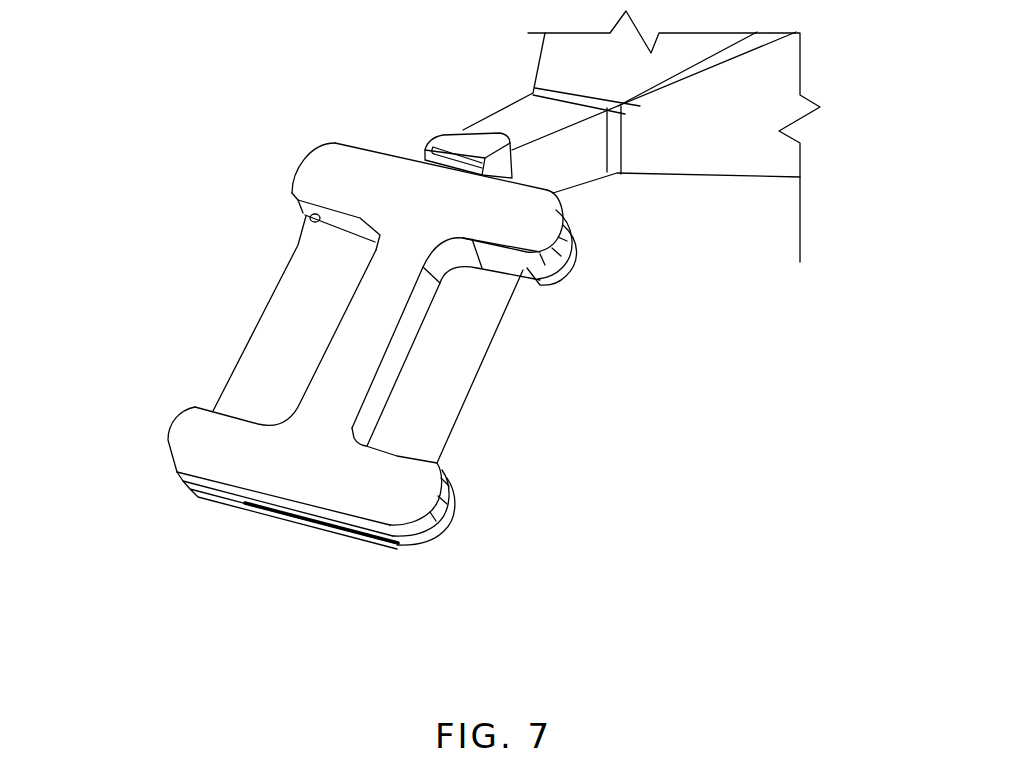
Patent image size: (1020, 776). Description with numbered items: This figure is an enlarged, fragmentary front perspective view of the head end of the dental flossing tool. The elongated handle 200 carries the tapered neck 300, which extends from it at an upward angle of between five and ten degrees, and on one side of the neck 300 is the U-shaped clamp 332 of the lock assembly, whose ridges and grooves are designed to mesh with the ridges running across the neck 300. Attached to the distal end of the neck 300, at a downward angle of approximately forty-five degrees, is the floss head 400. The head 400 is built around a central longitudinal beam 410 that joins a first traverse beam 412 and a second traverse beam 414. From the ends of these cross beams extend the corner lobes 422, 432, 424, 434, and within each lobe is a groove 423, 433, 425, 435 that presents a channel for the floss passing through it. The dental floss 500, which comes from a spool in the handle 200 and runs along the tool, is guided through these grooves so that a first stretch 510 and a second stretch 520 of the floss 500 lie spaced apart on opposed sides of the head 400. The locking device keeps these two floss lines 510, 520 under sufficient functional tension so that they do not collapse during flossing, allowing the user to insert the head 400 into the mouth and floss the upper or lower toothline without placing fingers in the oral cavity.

The handle 200 is at (733, 160).
The neck 300 is at (567, 167).
The U-shaped clamp 332 is at (462, 137).
The floss head 400 is at (364, 362).
The central longitudinal beam 410 is at (373, 332).
The first traverse beam 412 is at (307, 519).
The second traverse beam 414 is at (440, 227).
The corner lobe 422 is at (455, 507).
The groove 423 is at (420, 530).
The corner lobe 424 is at (571, 250).
The groove 425 is at (557, 281).
The corner lobe 432 is at (193, 497).
The groove 433 is at (185, 487).
The corner lobe 434 is at (298, 178).
The groove 435 is at (313, 223).
The dental floss 500 is at (700, 73).
The first stretch of floss 510 is at (502, 418).
The second stretch of floss 520 is at (253, 304).